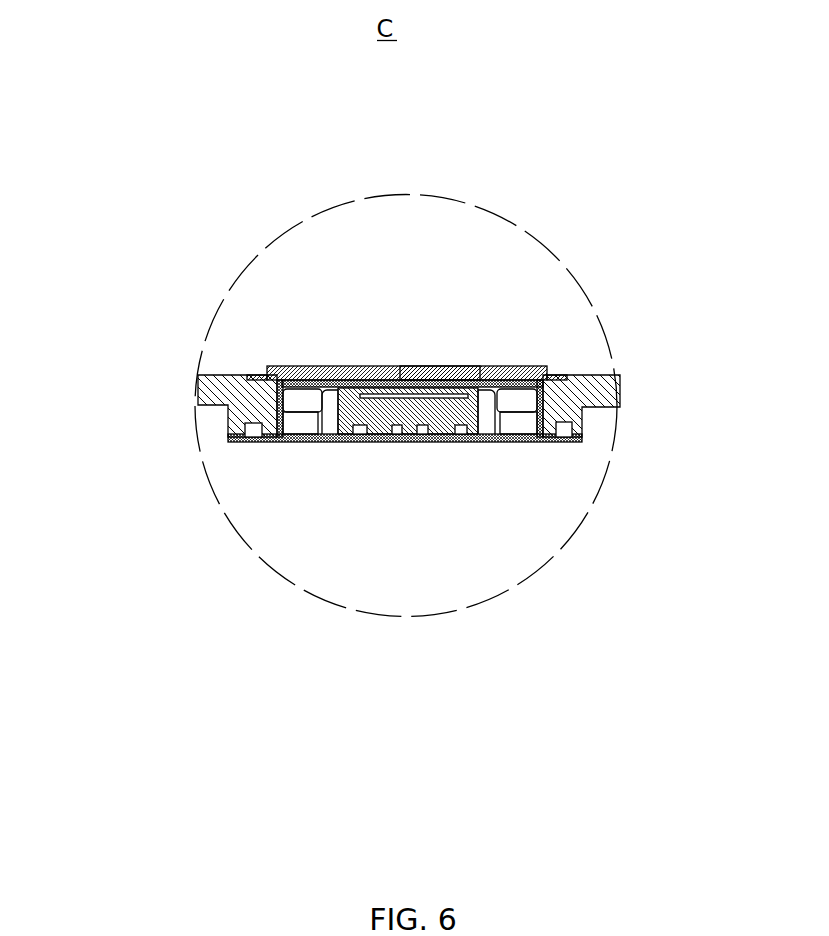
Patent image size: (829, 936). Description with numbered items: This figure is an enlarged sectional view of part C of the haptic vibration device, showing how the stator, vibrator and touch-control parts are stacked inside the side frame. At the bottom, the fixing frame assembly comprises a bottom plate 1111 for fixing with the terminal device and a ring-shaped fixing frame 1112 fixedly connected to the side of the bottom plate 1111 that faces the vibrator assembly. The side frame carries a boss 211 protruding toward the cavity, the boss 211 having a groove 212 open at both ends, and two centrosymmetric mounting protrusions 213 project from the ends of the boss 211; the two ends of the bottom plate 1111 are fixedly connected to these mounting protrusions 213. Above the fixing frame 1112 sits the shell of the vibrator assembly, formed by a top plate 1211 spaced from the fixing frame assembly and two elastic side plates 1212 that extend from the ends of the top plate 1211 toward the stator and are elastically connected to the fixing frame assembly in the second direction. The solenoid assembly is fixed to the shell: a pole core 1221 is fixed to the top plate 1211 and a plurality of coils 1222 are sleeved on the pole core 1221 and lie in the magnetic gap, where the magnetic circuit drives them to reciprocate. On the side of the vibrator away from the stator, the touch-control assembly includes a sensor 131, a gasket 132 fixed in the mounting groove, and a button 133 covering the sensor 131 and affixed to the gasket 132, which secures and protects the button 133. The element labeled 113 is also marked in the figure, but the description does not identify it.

The top plate 1211 is at (320, 370).
The side plates 1212 is at (258, 375).
The sensor 131 is at (435, 370).
The button 133 is at (463, 370).
The gasket 132 is at (548, 372).
The bottom plate 1111 is at (282, 435).
The fixing frame 1112 is at (317, 433).
The receiving groove 113 is at (335, 430).
The pole core 1221 is at (378, 438).
The coils 1222 is at (400, 440).
The boss 211 is at (530, 422).
The groove 212 is at (525, 435).
The mounting protrusions 213 is at (583, 426).